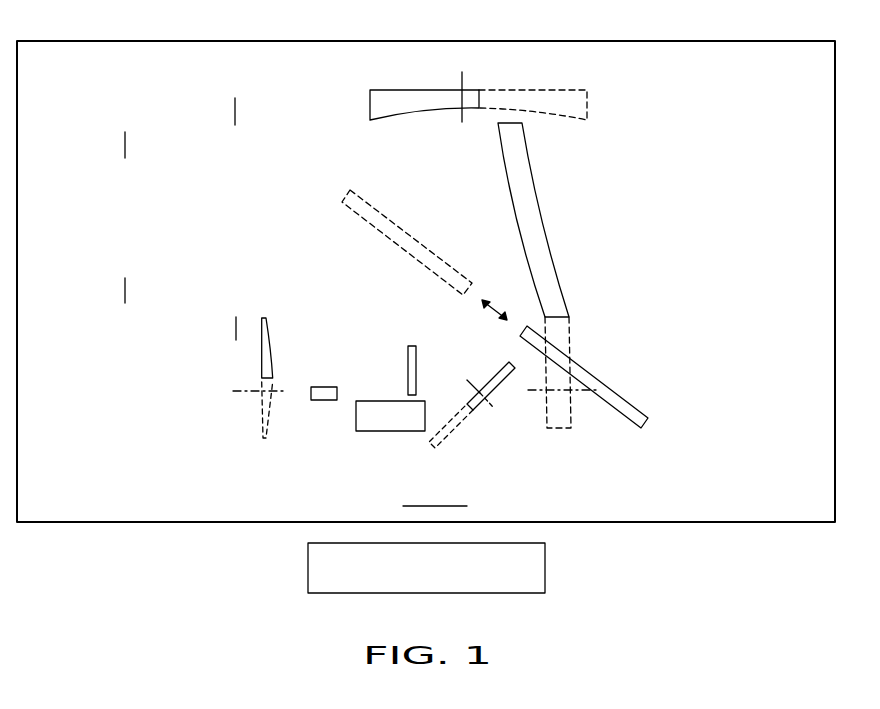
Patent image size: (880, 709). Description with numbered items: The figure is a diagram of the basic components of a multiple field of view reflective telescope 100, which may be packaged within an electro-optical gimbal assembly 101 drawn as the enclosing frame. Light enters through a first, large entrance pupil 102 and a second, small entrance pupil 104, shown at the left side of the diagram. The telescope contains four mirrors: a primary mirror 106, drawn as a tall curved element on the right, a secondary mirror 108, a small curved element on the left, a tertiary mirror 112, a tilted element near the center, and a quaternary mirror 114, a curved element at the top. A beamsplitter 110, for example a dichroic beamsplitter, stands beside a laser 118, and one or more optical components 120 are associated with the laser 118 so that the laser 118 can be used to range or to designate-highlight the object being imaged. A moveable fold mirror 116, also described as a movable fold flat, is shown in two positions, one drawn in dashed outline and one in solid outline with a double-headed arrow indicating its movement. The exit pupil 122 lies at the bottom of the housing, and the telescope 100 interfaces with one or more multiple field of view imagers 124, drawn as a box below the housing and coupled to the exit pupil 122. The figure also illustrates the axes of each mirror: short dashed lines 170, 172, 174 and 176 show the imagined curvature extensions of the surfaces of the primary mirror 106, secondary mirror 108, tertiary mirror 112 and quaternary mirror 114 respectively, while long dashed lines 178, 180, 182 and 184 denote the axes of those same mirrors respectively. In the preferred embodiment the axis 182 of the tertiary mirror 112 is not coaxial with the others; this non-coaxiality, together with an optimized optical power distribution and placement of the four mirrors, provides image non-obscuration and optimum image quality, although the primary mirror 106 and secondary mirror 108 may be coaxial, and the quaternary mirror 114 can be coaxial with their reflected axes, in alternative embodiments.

The multiple field of view reflective telescope 100 is at (725, 118).
The electro-optical gimbal assembly 101 is at (588, 41).
The first entrance pupil 102 is at (235, 327).
The second entrance pupil 104 is at (123, 293).
The primary mirror 106 is at (548, 200).
The secondary mirror 108 is at (261, 362).
The beamsplitter 110 is at (408, 357).
The tertiary mirror 112 is at (497, 372).
The quaternary mirror 114 is at (403, 88).
The moveable fold mirror 116 is at (380, 212).
The laser 118 is at (408, 431).
The optical components 120 is at (325, 387).
The exit pupil 122 is at (467, 505).
The multiple field of view imagers 124 is at (545, 567).
The short dashed line 170 is at (552, 431).
The short dashed line 172 is at (263, 437).
The short dashed line 174 is at (440, 445).
The short dashed line 176 is at (542, 88).
The long dashed line 178 is at (580, 393).
The long dashed line 180 is at (252, 393).
The long dashed line 182 is at (488, 410).
The long dashed line 184 is at (462, 77).